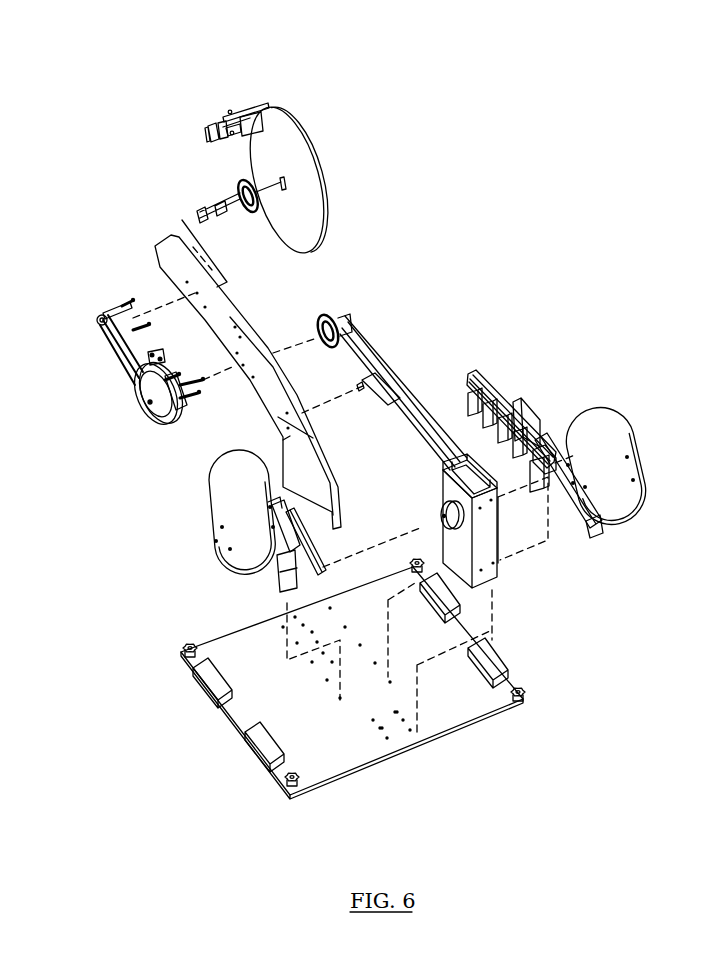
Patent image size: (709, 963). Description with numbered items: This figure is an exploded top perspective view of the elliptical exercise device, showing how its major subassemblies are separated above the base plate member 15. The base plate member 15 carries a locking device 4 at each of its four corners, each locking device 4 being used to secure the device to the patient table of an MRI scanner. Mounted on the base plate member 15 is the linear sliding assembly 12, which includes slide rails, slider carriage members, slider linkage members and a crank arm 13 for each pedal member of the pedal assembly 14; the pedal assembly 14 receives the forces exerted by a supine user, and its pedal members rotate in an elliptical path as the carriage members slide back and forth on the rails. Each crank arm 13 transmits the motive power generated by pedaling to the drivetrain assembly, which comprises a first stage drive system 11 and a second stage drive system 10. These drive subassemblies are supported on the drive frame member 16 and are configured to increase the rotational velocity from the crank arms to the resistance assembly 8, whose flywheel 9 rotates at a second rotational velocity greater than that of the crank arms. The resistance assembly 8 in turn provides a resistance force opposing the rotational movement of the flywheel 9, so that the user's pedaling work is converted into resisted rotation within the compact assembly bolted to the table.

The locking device 4 is at (297, 782).
The resistance assembly 8 is at (243, 108).
The flywheel 9 is at (293, 158).
The second stage drive system 10 is at (143, 387).
The first stage drive system 11 is at (353, 333).
The linear sliding assembly 12 is at (525, 403).
The crank arm 13 is at (298, 552).
The pedal assembly 14 is at (245, 508).
The base plate member 15 is at (247, 712).
The drive frame member 16 is at (218, 322).